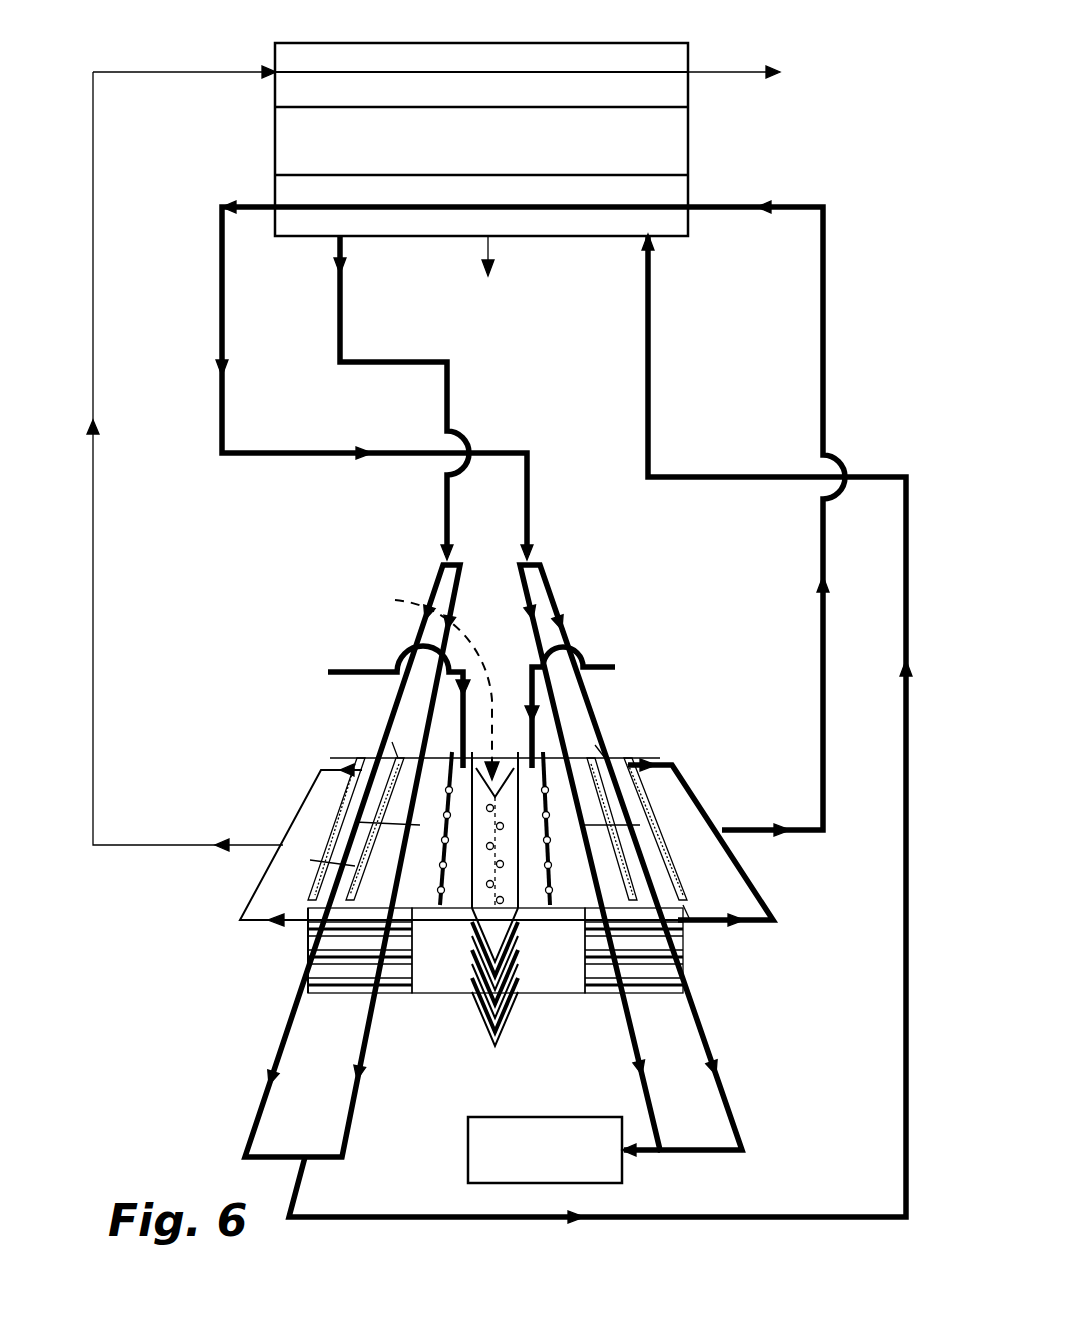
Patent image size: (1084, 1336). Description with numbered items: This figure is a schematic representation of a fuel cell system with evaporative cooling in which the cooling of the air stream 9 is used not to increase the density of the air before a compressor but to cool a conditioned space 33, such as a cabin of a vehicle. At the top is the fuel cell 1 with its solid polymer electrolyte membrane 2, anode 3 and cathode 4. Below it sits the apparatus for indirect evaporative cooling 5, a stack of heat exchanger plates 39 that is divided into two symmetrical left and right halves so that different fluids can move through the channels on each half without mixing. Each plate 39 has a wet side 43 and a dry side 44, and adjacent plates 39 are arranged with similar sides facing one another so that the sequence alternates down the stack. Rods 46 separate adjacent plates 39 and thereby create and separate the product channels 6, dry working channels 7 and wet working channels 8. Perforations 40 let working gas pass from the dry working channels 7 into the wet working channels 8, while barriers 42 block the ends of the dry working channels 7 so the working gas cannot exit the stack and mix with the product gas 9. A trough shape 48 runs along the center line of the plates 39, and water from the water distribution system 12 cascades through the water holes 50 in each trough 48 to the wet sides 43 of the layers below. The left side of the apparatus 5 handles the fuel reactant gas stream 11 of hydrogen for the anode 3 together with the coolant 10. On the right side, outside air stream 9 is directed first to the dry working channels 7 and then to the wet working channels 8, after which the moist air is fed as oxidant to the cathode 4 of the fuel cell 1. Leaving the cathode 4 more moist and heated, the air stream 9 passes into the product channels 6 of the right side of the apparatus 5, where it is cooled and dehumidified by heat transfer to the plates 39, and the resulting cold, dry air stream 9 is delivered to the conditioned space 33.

The fuel cell 1 is at (352, 38).
The solid polymer electrolyte membrane 2 is at (297, 135).
The anode 3 is at (655, 58).
The cathode 4 is at (438, 240).
The apparatus for indirect evaporative cooling 5 is at (675, 864).
The product channels 6 is at (390, 758).
The dry working channels 7 is at (490, 795).
The wet working channels 8 is at (685, 955).
The air reactant stream 9 is at (270, 238).
The coolant 10 is at (347, 300).
The fuel reactant gas stream 11 is at (240, 76).
The water distribution system 12 is at (492, 255).
The conditioned space 33 is at (592, 1117).
The heat exchanger plates 39 is at (690, 905).
The perforations 40 is at (600, 745).
The barriers 42 is at (558, 948).
The wet sides 43 is at (320, 930).
The dry sides 44 is at (350, 866).
The rods 46 is at (360, 822).
The trough shape 48 is at (478, 902).
The water holes 50 is at (395, 745).